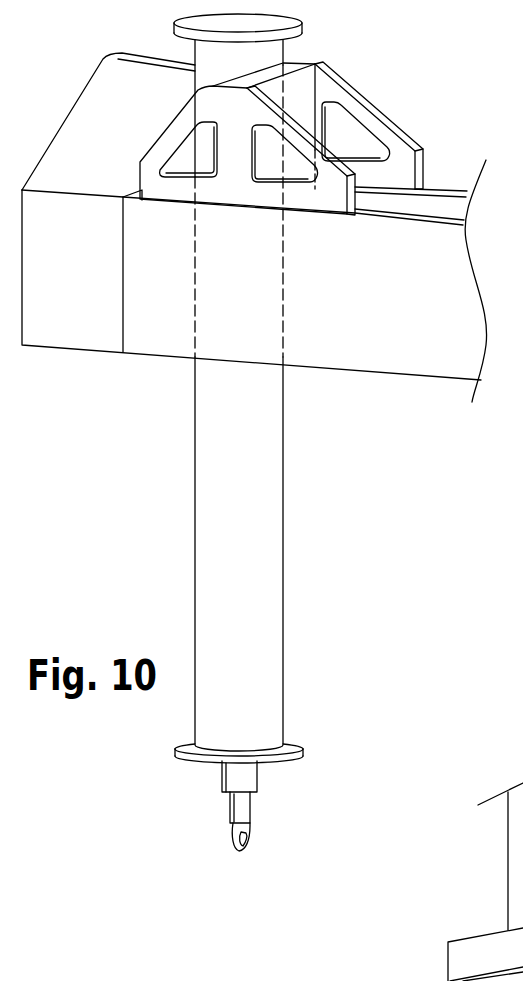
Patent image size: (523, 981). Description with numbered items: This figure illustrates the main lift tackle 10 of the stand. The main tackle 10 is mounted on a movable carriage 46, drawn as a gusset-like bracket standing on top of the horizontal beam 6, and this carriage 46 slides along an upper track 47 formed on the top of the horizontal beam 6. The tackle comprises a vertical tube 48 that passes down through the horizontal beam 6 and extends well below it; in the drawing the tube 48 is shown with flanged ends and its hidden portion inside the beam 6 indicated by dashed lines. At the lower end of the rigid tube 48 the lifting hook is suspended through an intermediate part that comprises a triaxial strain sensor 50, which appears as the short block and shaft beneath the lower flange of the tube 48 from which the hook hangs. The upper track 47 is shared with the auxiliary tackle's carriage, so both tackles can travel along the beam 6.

The horizontal beam 6 is at (393, 336).
The main tackle 10 is at (336, 646).
The movable carriage 46 is at (360, 115).
The upper track 47 is at (440, 191).
The vertical tube 48 is at (283, 593).
The triaxial strain sensor 50 is at (257, 777).